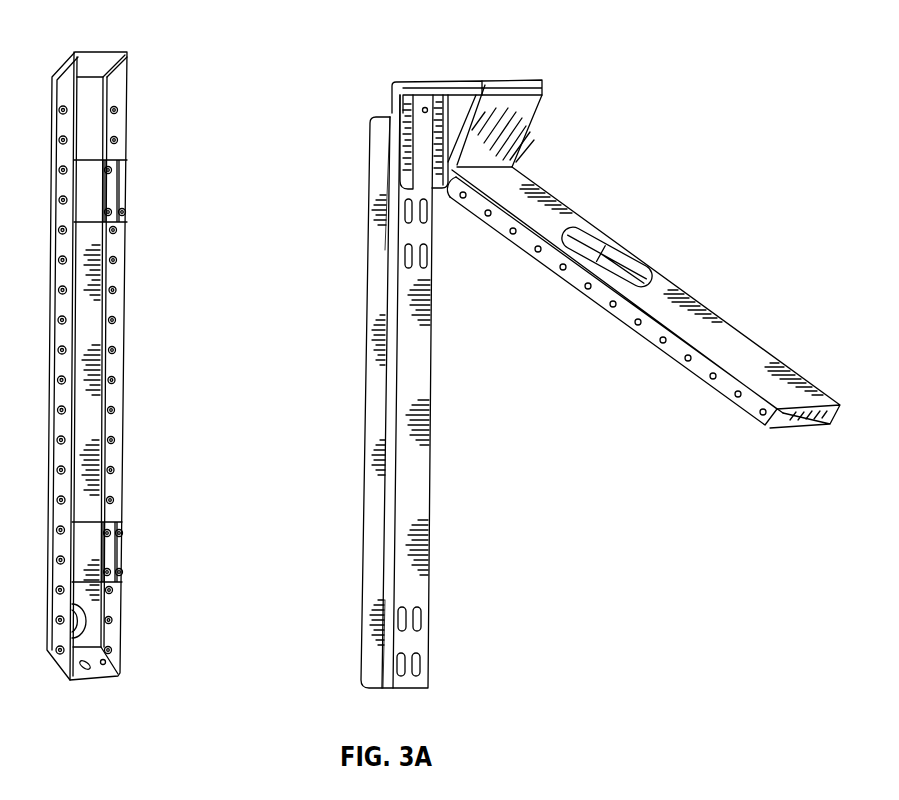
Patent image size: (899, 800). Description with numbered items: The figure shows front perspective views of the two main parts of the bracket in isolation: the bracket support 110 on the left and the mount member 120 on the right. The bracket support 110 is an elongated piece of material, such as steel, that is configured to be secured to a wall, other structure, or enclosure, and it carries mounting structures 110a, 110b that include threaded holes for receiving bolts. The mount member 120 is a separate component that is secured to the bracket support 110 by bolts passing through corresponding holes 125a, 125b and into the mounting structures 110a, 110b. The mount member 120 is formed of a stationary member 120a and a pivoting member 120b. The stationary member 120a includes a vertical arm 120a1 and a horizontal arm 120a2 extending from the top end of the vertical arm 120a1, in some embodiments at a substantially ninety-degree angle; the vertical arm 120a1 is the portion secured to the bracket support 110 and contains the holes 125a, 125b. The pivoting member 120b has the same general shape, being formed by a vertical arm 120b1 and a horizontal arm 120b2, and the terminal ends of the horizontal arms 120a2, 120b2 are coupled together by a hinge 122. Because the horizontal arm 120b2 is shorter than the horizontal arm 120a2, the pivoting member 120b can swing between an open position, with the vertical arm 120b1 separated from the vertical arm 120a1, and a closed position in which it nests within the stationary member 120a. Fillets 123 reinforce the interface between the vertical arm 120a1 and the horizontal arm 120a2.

The bracket support 110 is at (120, 683).
The mounting structure 110a is at (122, 198).
The mounting structure 110b is at (118, 555).
The mount member 120 is at (693, 87).
The stationary member 120a is at (443, 456).
The vertical arm 120a1 is at (423, 367).
The horizontal arm 120a2 is at (447, 82).
The pivoting member 120b is at (660, 253).
The vertical arm 120b1 is at (738, 350).
The horizontal arm 120b2 is at (528, 128).
The hinge 122 is at (542, 87).
The fillet 123 is at (380, 158).
The hole 125a is at (388, 251).
The hole 125b is at (388, 652).